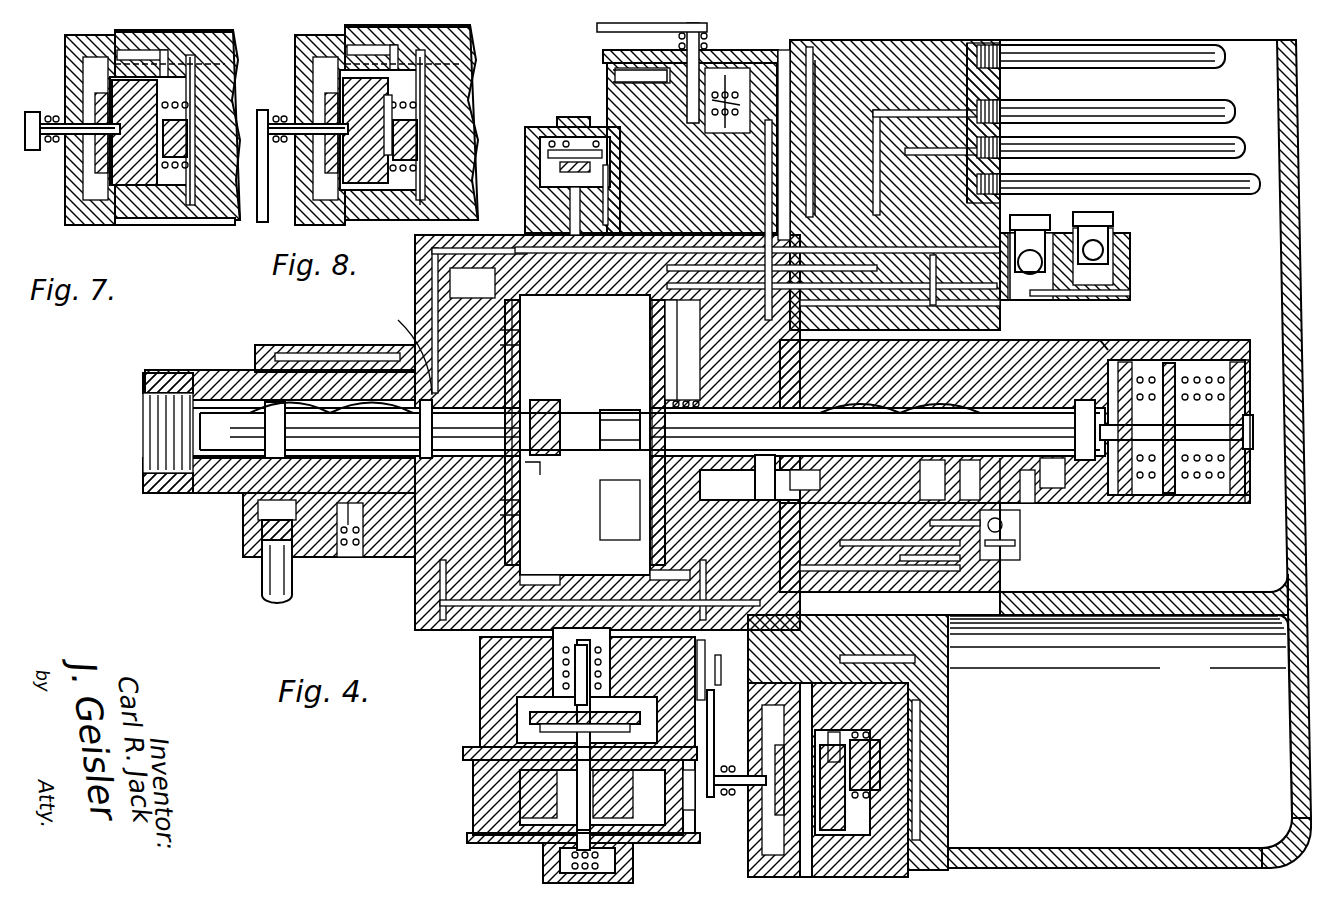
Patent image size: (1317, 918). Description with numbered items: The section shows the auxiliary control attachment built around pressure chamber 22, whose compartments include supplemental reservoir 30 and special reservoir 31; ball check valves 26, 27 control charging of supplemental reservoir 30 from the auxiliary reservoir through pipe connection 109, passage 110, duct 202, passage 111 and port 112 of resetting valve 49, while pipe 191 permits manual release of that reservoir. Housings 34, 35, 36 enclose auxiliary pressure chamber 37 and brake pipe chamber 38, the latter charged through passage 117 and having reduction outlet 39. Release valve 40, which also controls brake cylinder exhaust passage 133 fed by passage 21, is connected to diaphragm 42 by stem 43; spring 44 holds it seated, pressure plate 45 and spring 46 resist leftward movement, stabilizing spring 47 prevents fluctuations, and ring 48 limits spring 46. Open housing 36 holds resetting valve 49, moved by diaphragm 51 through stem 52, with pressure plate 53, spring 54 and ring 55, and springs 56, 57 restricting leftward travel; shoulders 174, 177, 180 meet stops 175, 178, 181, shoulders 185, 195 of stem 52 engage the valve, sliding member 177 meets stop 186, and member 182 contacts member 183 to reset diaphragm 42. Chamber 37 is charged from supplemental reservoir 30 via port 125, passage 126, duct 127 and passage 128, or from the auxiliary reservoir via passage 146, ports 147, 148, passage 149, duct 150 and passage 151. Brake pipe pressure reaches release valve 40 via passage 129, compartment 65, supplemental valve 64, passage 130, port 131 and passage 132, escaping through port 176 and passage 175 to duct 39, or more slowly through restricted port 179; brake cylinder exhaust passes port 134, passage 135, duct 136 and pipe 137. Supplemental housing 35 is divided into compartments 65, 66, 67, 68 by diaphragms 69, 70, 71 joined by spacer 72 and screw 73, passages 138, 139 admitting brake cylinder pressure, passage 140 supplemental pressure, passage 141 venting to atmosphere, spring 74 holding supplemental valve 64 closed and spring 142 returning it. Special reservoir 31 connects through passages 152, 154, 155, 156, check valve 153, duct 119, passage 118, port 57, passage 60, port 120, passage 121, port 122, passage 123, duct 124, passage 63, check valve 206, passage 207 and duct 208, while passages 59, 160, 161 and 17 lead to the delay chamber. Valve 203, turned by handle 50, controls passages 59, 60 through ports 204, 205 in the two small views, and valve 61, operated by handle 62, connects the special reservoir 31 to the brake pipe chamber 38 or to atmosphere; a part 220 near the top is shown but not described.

In FIG. 4, the passage 17 is at (733, 670).
In FIG. 4, the pipe 21 is at (1111, 148).
In FIG. 4, the reservoir base 22 is at (1130, 846).
In FIG. 4, the screw 26 is at (1032, 255).
In FIG. 4, the screw 27 is at (1102, 240).
In FIG. 4, the chamber 30 is at (1109, 397).
In FIG. 4, the reservoir 31 is at (1114, 681).
In FIG. 4, the housing portion 34 is at (418, 615).
In FIG. 4, the housing wall 35 is at (480, 672).
In FIG. 4, the valve housing wall 36 is at (1140, 503).
In FIG. 4, the end cap 37 is at (175, 515).
In FIG. 4, the chamber 38 is at (585, 435).
In FIG. 4, the spring 39 is at (350, 556).
In FIG. 4, the housing step 40 is at (235, 500).
In FIG. 4, the rot disc 42 is at (527, 432).
In FIG. 4, the spring 43 is at (228, 408).
In FIG. 4, the shaft 44 is at (650, 431).
In FIG. 4, the disc portion 45 is at (514, 360).
In FIG. 4, the disc portion 46 is at (529, 440).
In FIG. 4, the hub 47 is at (526, 468).
In FIG. 4, the passage 48 is at (542, 562).
In FIG. 4, the passage 49 is at (1050, 490).
In FIG. 7, the lever 50 is at (32, 114).
In FIG. 8, the lever 50 is at (262, 222).
In FIG. 4, the lever 50 is at (714, 770).
In FIG. 4, the piston 51 is at (648, 336).
In FIG. 4, the housing 52 is at (1062, 400).
In FIG. 4, the piston rod 53 is at (650, 356).
In FIG. 4, the spring 54 is at (650, 384).
In FIG. 4, the piston plate 55 is at (648, 318).
In FIG. 4, the end plate 56 is at (1248, 450).
In FIG. 8, the spring 57 is at (382, 135).
In FIG. 4, the spring 57 is at (1212, 362).
In FIG. 7, the passage 59 is at (225, 74).
In FIG. 8, the passage 59 is at (455, 84).
In FIG. 4, the passage 59 is at (920, 720).
In FIG. 7, the valve body 60 is at (180, 190).
In FIG. 8, the valve body 60 is at (388, 192).
In FIG. 4, the valve body 60 is at (882, 838).
In FIG. 4, the valve seat 61 is at (648, 78).
In FIG. 4, the valve stem 62 is at (702, 28).
In FIG. 4, the valve housing 63 is at (612, 88).
In FIG. 4, the valve plate 64 is at (585, 727).
In FIG. 4, the valve housing 65 is at (517, 735).
In FIG. 4, the valve body 66 is at (500, 780).
In FIG. 4, the wall 67 is at (690, 822).
In FIG. 4, the spring cap 68 is at (556, 868).
In FIG. 4, the flange 69 is at (470, 752).
In FIG. 4, the plate 70 is at (500, 845).
In FIG. 4, the plate 71 is at (467, 838).
In FIG. 4, the stem 72 is at (560, 795).
In FIG. 4, the valve disc 73 is at (688, 868).
In FIG. 4, the spring 74 is at (633, 865).
In FIG. 4, the pipe 109 is at (1180, 194).
In FIG. 4, the screw stem 110 is at (1013, 240).
In FIG. 4, the passage 111 is at (1125, 272).
In FIG. 4, the passage 112 is at (976, 456).
In FIG. 4, the passage 117 is at (815, 60).
In FIG. 7, the valve housing 118 is at (200, 41).
In FIG. 8, the valve housing 118 is at (435, 50).
In FIG. 4, the valve housing 118 is at (870, 668).
In FIG. 4, the passage 119 is at (880, 576).
In FIG. 4, the spring 120 is at (900, 417).
In FIG. 4, the passage 121 is at (770, 330).
In FIG. 4, the spring 122 is at (729, 109).
In FIG. 4, the passage 123 is at (750, 70).
In FIG. 4, the passage 124 is at (784, 75).
In FIG. 4, the shaft 125 is at (890, 431).
In FIG. 4, the collar 126 is at (774, 456).
In FIG. 4, the passage 127 is at (650, 560).
In FIG. 4, the chamber 128 is at (615, 510).
In FIG. 4, the passage 129 is at (455, 702).
In FIG. 4, the passage 130 is at (768, 580).
In FIG. 4, the passage 131 is at (937, 456).
In FIG. 4, the passage 132 is at (425, 597).
In FIG. 4, the passage 133 is at (1000, 172).
In FIG. 4, the collar 134 is at (272, 430).
In FIG. 4, the passage 135 is at (260, 505).
In FIG. 4, the plunger head 136 is at (262, 532).
In FIG. 4, the plunger 137 is at (268, 580).
In FIG. 4, the pipe 138 is at (1147, 112).
In FIG. 4, the passage 139 is at (975, 100).
In FIG. 4, the passage 140 is at (713, 670).
In FIG. 4, the passage 141 is at (699, 790).
In FIG. 4, the plunger 142 is at (612, 685).
In FIG. 4, the passage 146 is at (1028, 505).
In FIG. 4, the passage 147 is at (1017, 458).
In FIG. 4, the passage 148 is at (812, 451).
In FIG. 4, the passage 149 is at (762, 474).
In FIG. 4, the passage 150 is at (815, 300).
In FIG. 4, the passage 151 is at (932, 280).
In FIG. 4, the passage 152 is at (945, 571).
In FIG. 4, the ball valve 153 is at (1005, 540).
In FIG. 4, the valve seat 154 is at (1000, 560).
In FIG. 4, the lever 155 is at (729, 742).
In FIG. 4, the passage 156 is at (900, 563).
In FIG. 7, the valve housing 160 is at (110, 38).
In FIG. 8, the valve housing 160 is at (405, 28).
In FIG. 4, the valve housing 160 is at (812, 685).
In FIG. 4, the passage 161 is at (841, 742).
In FIG. 4, the passage 174 is at (401, 353).
In FIG. 4, the collar 175 is at (385, 570).
In FIG. 4, the spring 176 is at (331, 420).
In FIG. 4, the plate 177 is at (1235, 503).
In FIG. 4, the piston 178 is at (1169, 362).
In FIG. 4, the passage 179 is at (955, 527).
In FIG. 4, the valve housing 180 is at (1200, 350).
In FIG. 4, the spring 181 is at (1148, 362).
In FIG. 4, the shaft end 182 is at (612, 452).
In FIG. 4, the shaft end 183 is at (549, 427).
In FIG. 4, the shaft end 185 is at (1249, 418).
In FIG. 4, the end plate 186 is at (1250, 503).
In FIG. 4, the pipe 191 is at (1222, 62).
In FIG. 4, the collar 195 is at (1085, 500).
In FIG. 4, the passage 202 is at (1120, 300).
In FIG. 7, the plunger 203 is at (128, 188).
In FIG. 8, the plunger 203 is at (357, 195).
In FIG. 4, the plunger 203 is at (828, 832).
In FIG. 7, the rod 204 is at (80, 150).
In FIG. 8, the rod 205 is at (330, 100).
In FIG. 4, the valve plate 206 is at (545, 178).
In FIG. 4, the passage 207 is at (530, 210).
In FIG. 4, the disc 208 is at (543, 432).
In FIG. 4, the cap 220 is at (560, 122).